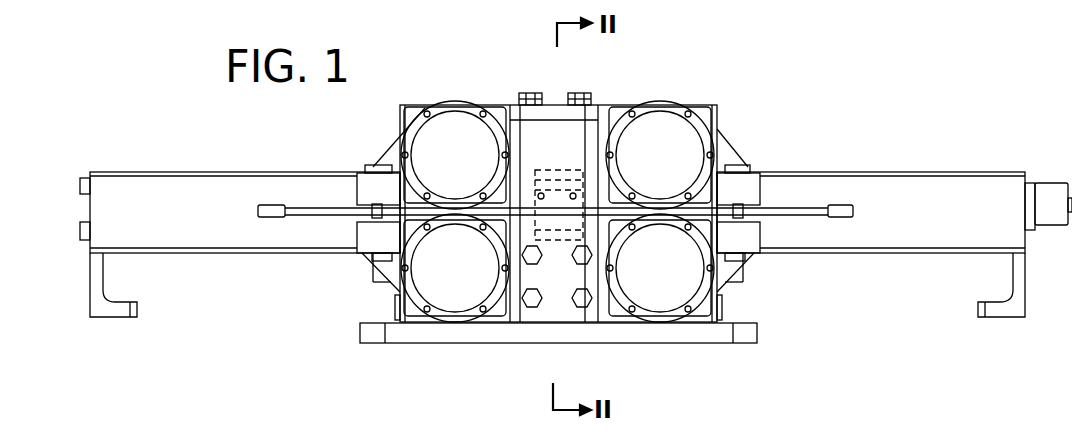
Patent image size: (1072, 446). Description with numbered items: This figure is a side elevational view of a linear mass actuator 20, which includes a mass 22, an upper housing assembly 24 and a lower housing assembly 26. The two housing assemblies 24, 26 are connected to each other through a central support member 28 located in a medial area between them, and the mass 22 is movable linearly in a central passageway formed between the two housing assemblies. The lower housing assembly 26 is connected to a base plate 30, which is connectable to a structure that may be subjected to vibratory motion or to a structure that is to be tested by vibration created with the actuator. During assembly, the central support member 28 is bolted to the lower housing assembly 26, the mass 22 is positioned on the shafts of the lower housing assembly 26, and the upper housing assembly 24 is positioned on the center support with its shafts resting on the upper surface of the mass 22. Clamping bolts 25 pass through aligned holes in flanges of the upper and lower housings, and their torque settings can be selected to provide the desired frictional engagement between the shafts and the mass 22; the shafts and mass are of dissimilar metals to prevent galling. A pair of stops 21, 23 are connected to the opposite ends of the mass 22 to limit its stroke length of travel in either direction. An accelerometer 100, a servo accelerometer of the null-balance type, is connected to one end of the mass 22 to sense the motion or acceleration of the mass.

The linear mass actuator 20 is at (737, 128).
The stop 21 is at (88, 292).
The mass 22 is at (210, 173).
The stop 23 is at (1028, 285).
The upper housing assembly 24 is at (384, 145).
The clamping bolts 25 is at (749, 165).
The lower housing assembly 26 is at (755, 258).
The central support member 28 is at (592, 125).
The base plate 30 is at (404, 344).
The accelerometer 100 is at (1052, 183).